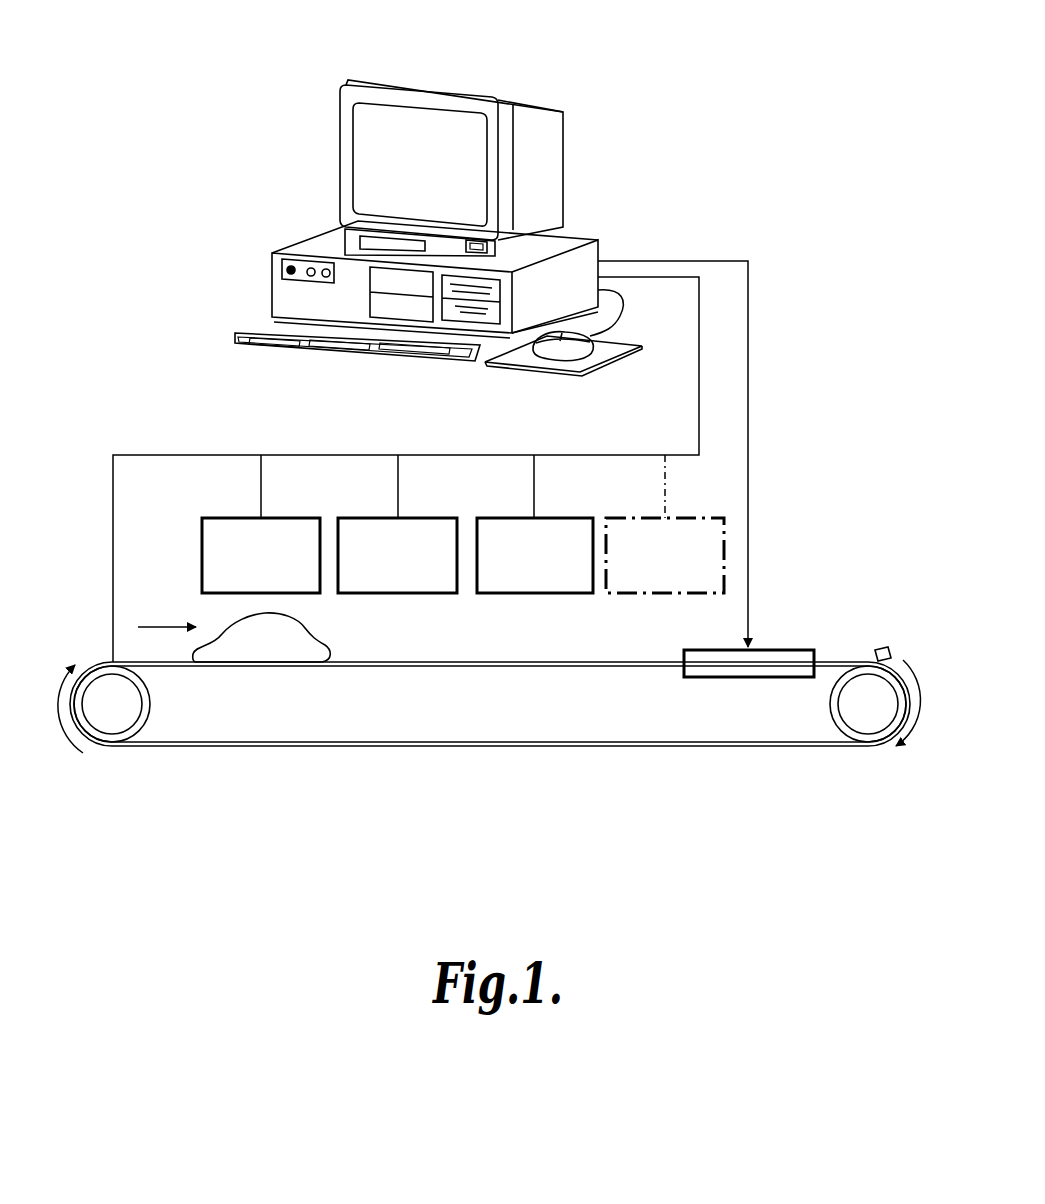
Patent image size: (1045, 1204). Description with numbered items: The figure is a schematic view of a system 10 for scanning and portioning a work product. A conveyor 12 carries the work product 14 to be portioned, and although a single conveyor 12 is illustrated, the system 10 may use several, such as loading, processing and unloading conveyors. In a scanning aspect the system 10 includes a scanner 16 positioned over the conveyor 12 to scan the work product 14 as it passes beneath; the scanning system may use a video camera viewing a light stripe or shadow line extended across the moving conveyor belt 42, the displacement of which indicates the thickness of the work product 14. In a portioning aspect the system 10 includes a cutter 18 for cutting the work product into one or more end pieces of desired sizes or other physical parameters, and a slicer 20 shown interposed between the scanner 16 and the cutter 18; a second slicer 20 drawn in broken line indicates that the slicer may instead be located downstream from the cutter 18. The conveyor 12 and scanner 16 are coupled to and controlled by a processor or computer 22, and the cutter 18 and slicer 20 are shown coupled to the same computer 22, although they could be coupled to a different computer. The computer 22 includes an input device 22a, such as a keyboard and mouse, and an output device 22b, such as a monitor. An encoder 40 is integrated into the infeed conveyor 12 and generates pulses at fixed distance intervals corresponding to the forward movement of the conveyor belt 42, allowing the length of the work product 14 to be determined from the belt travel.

The system 10 is at (772, 227).
The conveyor 12 is at (287, 758).
The work product 14 is at (298, 630).
The scanner 16 is at (202, 553).
The cutter 18 is at (501, 518).
The slicer 20 is at (373, 518).
The computer 22 is at (272, 275).
The input device 22a is at (475, 368).
The output device 22b is at (513, 100).
The encoder 40 is at (886, 650).
The conveyor belt 42 is at (498, 662).